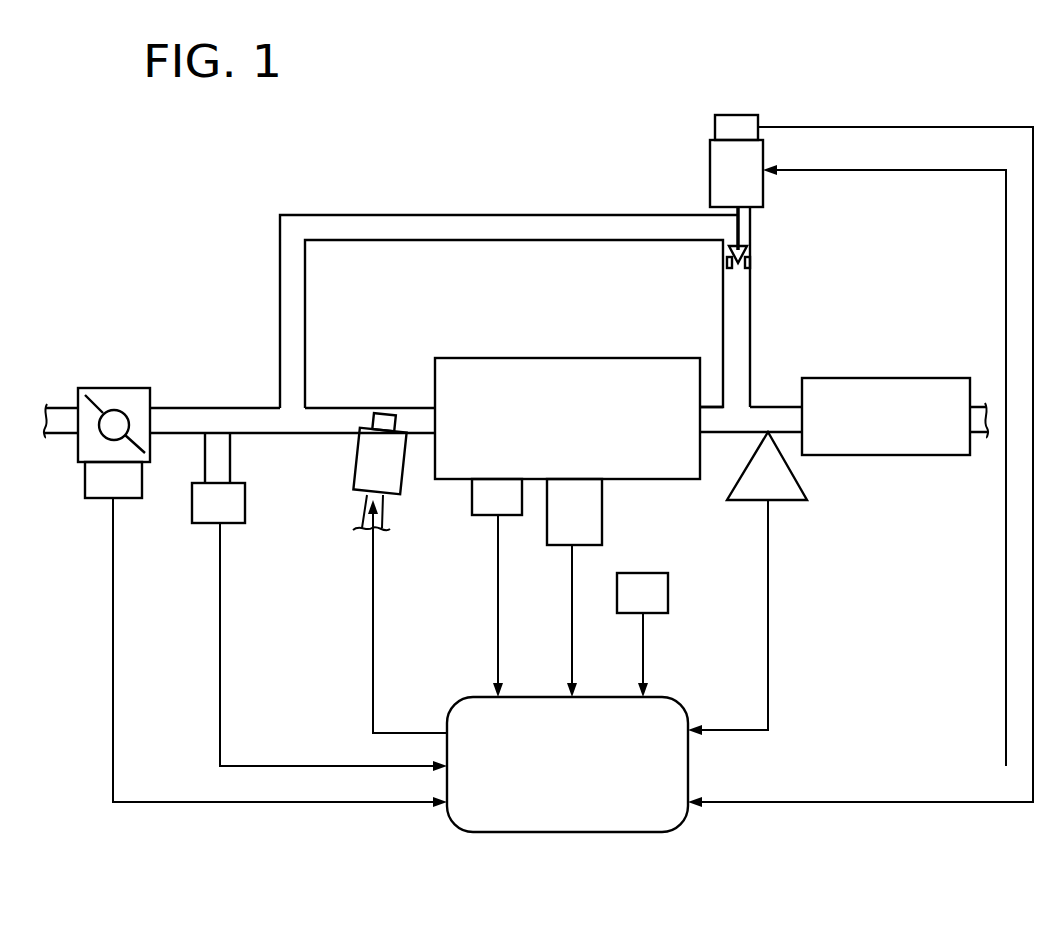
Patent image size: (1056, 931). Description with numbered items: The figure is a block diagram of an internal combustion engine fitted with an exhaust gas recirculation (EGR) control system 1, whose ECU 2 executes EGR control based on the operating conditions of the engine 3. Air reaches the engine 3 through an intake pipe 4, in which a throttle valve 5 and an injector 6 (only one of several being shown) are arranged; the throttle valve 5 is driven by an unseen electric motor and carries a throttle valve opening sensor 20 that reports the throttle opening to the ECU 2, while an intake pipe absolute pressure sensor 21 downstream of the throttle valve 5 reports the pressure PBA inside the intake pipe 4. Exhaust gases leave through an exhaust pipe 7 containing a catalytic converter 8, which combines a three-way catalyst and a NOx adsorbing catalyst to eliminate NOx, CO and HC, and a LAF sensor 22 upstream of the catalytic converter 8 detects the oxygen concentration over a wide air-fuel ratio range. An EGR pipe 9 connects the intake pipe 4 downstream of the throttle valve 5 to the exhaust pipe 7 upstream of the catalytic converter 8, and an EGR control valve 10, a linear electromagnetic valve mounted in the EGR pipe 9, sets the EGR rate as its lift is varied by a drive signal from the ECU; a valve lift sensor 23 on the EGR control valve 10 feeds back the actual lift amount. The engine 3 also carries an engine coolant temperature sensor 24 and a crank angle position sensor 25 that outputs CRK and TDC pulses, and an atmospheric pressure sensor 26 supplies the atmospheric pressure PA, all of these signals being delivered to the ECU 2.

The EGR control system 1 is at (528, 92).
The ECU 2 is at (520, 833).
The internal combustion engine 3 is at (553, 357).
The intake pipe 4 is at (322, 407).
The throttle valve 5 is at (108, 387).
The injector 6 is at (355, 460).
The exhaust pipe 7 is at (768, 405).
The catalytic converter 8 is at (863, 378).
The EGR pipe 9 is at (385, 213).
The EGR control valve 10 is at (763, 193).
The throttle valve opening sensor 20 is at (95, 500).
The intake pipe absolute pressure sensor 21 is at (205, 524).
The LAF sensor 22 is at (790, 500).
The valve lift sensor 23 is at (733, 115).
The engine coolant temperature sensor 24 is at (482, 515).
The crank angle position sensor 25 is at (602, 512).
The atmospheric pressure sensor 26 is at (668, 593).